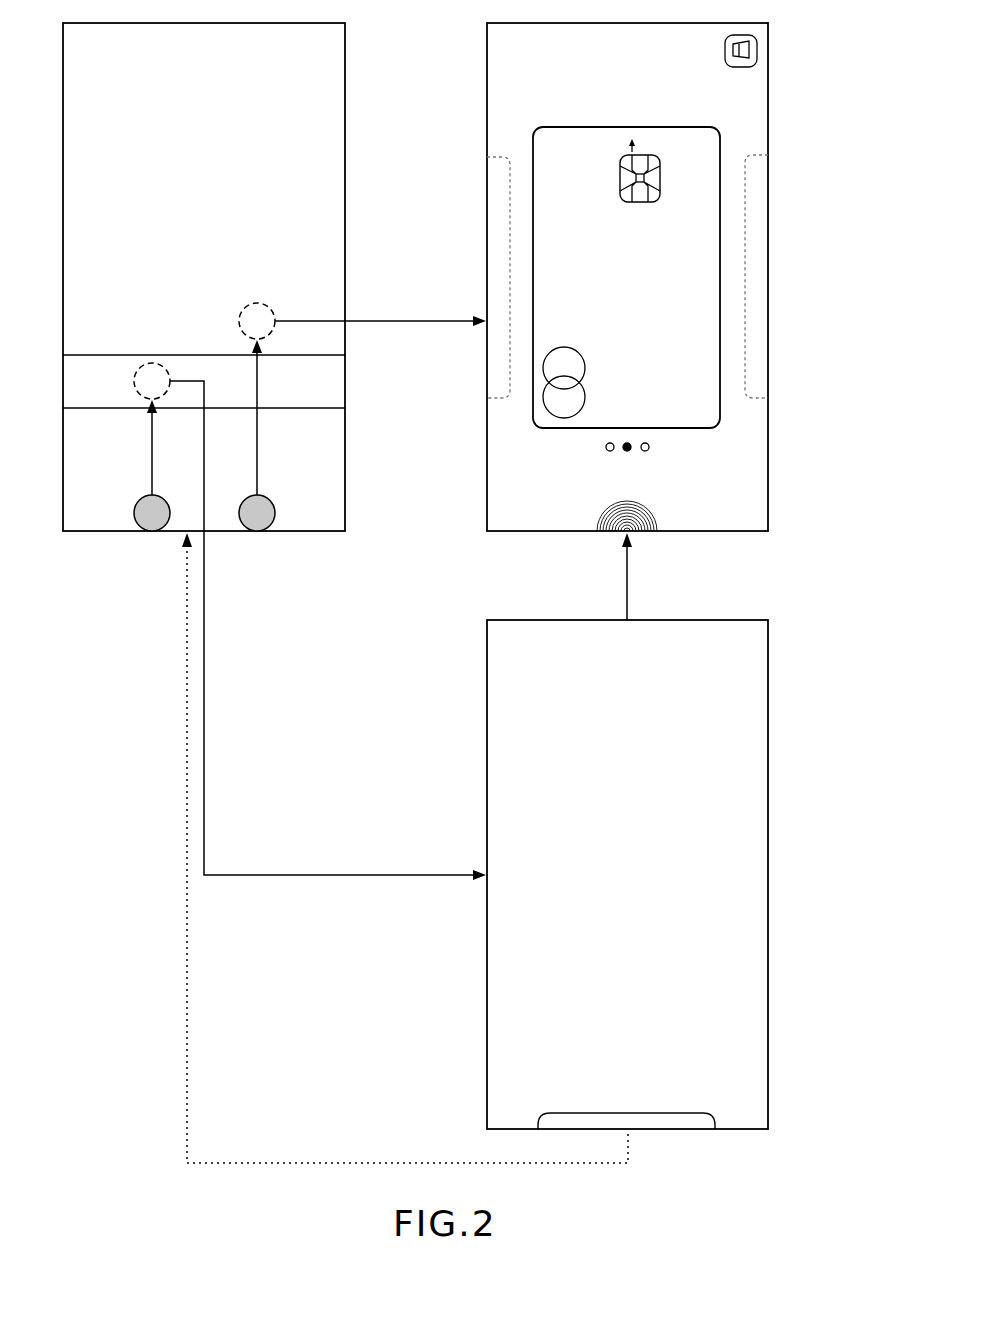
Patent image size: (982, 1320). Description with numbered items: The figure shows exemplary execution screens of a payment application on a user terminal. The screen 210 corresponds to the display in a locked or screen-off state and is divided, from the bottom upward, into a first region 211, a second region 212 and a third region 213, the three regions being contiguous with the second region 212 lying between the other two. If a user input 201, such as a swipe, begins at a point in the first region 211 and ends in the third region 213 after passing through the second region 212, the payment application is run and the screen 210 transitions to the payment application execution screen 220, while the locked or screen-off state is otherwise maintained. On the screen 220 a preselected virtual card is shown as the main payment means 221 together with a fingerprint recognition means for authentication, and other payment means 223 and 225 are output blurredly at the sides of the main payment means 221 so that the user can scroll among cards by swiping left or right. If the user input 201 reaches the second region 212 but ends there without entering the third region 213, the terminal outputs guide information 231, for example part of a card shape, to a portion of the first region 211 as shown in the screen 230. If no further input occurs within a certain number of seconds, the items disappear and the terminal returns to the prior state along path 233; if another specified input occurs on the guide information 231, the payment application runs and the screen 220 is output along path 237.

The user input 201 is at (152, 533).
The screen 210 is at (345, 85).
The first region 211 is at (166, 433).
The second region 212 is at (204, 355).
The third region 213 is at (204, 232).
The payment application execution screen 220 is at (768, 85).
The main payment means 221 is at (710, 413).
The payment means 223 is at (763, 278).
The payment means 225 is at (486, 225).
The screen 230 is at (768, 683).
The guide information 231 is at (687, 1131).
The path 233 is at (187, 1027).
The path 237 is at (627, 577).